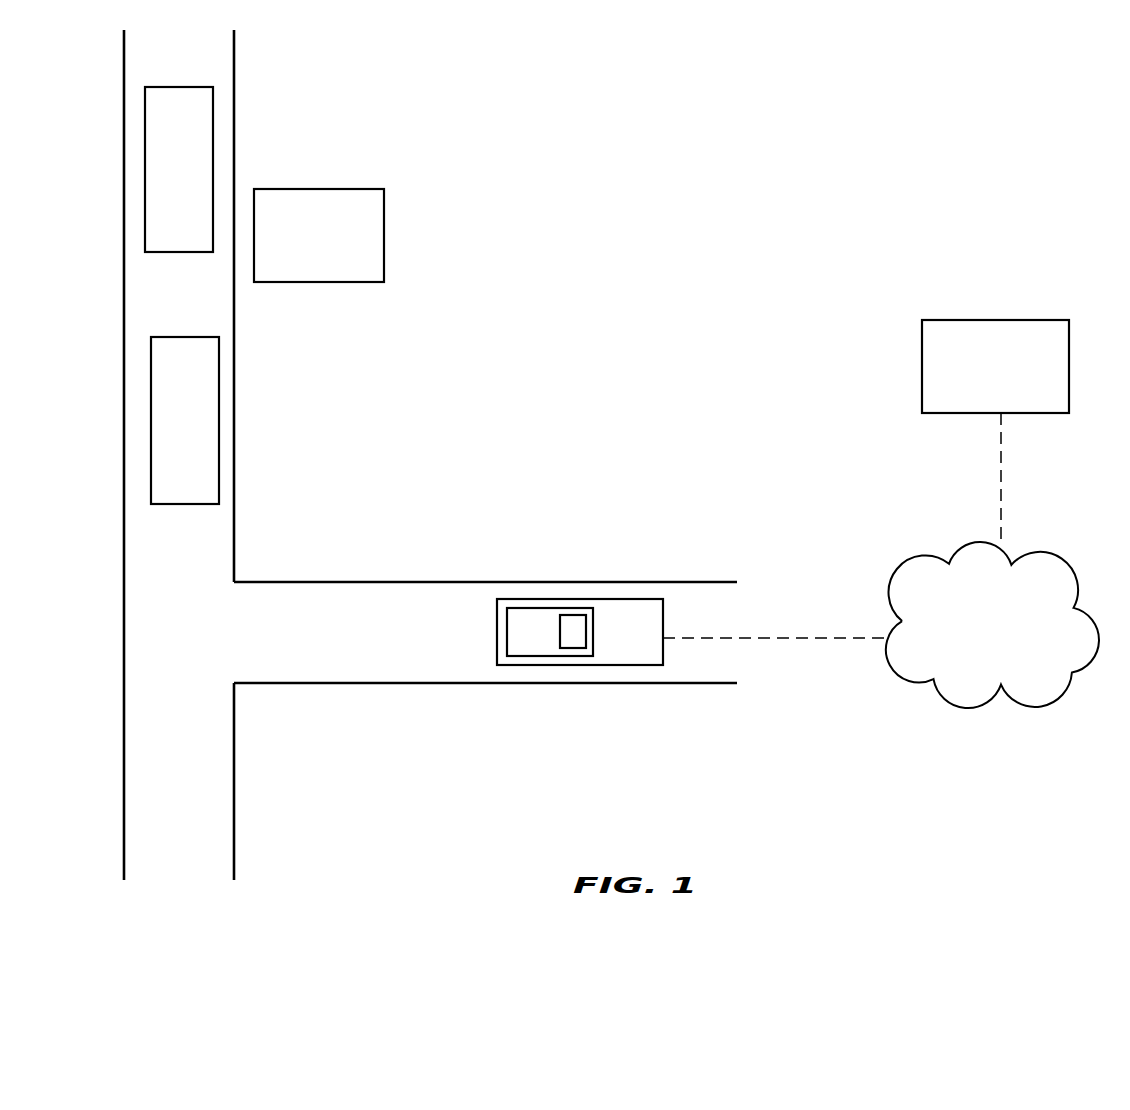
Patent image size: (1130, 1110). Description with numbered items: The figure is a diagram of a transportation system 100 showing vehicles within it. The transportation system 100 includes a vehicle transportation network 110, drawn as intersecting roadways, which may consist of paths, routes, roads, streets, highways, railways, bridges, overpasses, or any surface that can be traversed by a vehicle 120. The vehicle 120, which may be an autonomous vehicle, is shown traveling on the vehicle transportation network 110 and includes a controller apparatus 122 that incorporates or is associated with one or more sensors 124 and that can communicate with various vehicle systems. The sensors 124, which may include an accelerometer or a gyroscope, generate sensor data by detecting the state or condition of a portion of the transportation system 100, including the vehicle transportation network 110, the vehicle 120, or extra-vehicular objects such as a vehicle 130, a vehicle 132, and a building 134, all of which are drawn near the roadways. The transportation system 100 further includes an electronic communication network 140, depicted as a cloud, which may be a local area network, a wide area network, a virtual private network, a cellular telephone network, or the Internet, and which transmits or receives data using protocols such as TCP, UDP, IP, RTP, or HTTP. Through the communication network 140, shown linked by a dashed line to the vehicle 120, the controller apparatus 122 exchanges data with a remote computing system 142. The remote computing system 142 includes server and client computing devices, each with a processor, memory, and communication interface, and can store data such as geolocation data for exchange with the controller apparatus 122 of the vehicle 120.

The transportation system 100 is at (840, 98).
The vehicle transportation network 110 is at (267, 560).
The vehicle 120 is at (693, 639).
The controller apparatus 122 is at (528, 656).
The sensors 124 is at (581, 648).
The vehicle 130 is at (178, 337).
The vehicle 132 is at (176, 87).
The building 134 is at (320, 189).
The electronic communication network 140 is at (933, 552).
The remote computing system 142 is at (994, 320).